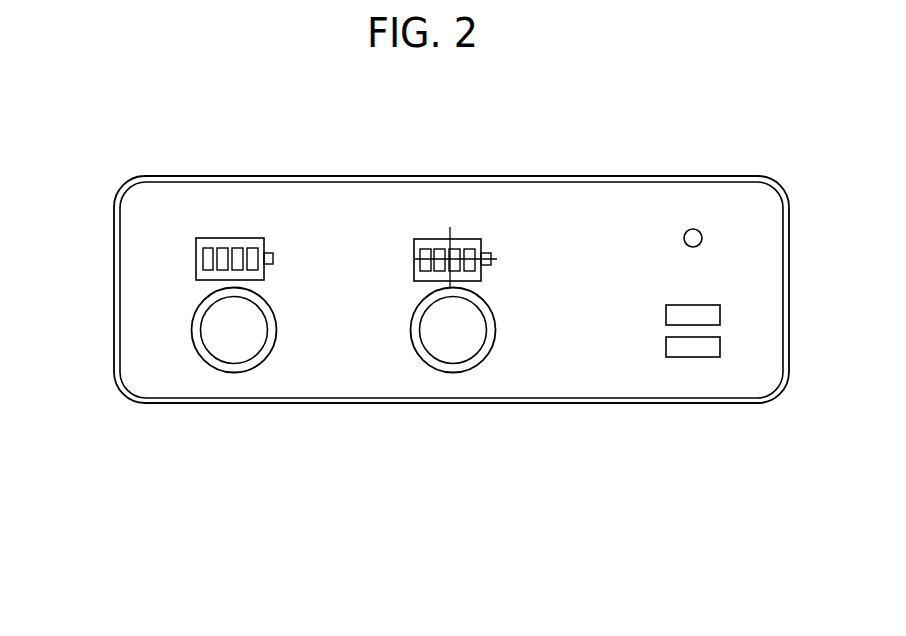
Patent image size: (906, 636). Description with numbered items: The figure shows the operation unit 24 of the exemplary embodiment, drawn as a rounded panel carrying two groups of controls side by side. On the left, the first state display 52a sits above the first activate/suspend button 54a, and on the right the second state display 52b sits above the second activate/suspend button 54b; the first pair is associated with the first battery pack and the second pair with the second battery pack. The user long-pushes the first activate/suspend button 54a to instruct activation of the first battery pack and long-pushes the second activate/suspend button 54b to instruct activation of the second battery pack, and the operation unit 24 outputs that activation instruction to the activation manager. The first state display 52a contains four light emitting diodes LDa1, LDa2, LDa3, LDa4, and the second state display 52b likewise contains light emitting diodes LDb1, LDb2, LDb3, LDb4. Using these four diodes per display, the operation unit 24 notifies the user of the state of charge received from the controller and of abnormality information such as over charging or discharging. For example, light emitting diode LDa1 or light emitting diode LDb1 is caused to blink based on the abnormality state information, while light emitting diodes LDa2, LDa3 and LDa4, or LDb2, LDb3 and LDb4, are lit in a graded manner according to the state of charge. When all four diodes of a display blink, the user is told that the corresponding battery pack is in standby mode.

The operation unit 24 is at (406, 397).
The first state display 52a is at (276, 255).
The second state display 52b is at (494, 256).
The first activate/suspend button 54a is at (228, 345).
The second activate/suspend button 54b is at (440, 345).
The light emitting diode LDa1 is at (204, 278).
The light emitting diode LDa2 is at (221, 246).
The light emitting diode LDa3 is at (243, 238).
The light emitting diode LDa4 is at (268, 279).
The light emitting diode LDb1 is at (421, 279).
The light emitting diode LDb2 is at (438, 246).
The light emitting diode LDb3 is at (461, 239).
The light emitting diode LDb4 is at (484, 280).